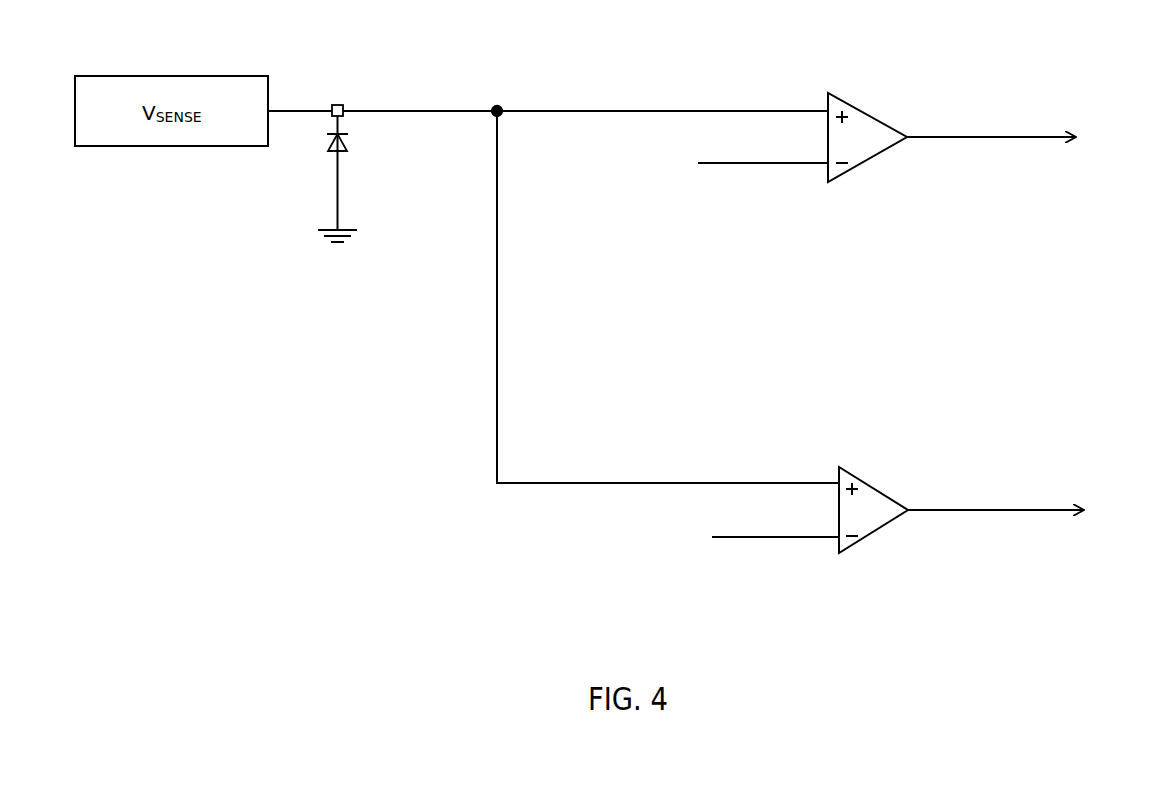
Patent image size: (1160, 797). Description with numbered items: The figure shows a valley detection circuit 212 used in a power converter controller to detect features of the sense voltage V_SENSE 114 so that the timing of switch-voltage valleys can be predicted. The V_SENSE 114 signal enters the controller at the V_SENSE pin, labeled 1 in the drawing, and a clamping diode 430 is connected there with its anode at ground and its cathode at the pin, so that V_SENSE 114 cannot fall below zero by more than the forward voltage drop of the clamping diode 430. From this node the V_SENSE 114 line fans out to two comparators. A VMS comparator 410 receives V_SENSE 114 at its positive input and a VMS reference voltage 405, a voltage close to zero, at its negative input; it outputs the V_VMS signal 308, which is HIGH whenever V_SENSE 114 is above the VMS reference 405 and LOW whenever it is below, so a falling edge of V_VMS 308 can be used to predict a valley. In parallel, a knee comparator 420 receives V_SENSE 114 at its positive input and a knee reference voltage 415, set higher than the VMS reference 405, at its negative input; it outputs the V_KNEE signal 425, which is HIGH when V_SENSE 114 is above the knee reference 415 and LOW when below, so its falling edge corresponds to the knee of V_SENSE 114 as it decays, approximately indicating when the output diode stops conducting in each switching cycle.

The sense terminal pin 1 is at (305, 90).
The V_SENSE 114 is at (474, 96).
The clamping diode 430 is at (312, 143).
The valley detection circuit 212 is at (445, 418).
The VMS reference voltage 405 is at (627, 188).
The VMS comparator 410 is at (876, 104).
The V_VMS signal 308 is at (1006, 122).
The knee reference voltage 415 is at (629, 556).
The knee comparator 420 is at (897, 490).
The V_KNEE signal 425 is at (1024, 522).